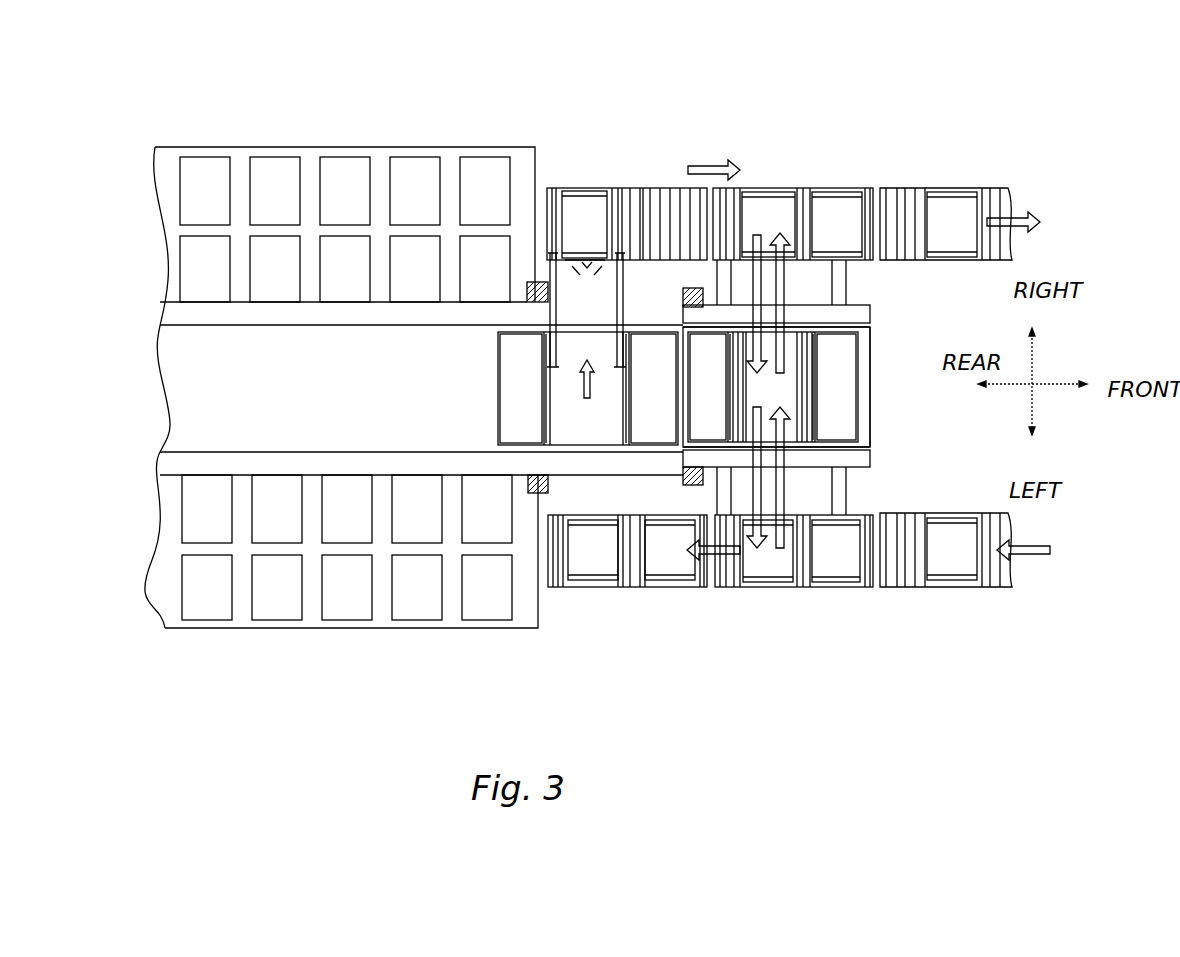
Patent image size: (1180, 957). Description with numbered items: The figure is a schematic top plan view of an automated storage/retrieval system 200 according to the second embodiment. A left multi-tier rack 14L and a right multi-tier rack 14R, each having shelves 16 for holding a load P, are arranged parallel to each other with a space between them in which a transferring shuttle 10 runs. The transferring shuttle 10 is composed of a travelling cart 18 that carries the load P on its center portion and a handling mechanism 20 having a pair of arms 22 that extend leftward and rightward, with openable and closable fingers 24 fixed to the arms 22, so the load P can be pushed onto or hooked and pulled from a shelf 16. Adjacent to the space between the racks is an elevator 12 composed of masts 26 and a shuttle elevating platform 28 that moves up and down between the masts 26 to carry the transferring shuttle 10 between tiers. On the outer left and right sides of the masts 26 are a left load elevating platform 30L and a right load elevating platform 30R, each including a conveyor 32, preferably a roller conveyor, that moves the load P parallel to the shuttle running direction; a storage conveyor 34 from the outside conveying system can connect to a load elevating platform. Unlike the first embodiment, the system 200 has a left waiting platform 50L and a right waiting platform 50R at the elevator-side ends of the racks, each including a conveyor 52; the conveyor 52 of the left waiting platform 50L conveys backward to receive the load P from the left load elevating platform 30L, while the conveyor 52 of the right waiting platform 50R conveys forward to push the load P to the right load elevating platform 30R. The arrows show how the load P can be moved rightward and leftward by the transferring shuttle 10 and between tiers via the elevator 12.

The automated storage/retrieval system 200 is at (998, 97).
The right multi-tier rack 14R is at (450, 147).
The left multi-tier rack 14L is at (493, 628).
The shelf 16 is at (313, 158).
The load P is at (202, 175).
The transferring shuttle 10 is at (497, 367).
The travelling cart 18 is at (533, 400).
The handling mechanism 20 is at (543, 412).
The arm 22 is at (556, 408).
The finger 24 is at (585, 281).
The mast 26 is at (685, 297).
The shuttle elevating platform 28 is at (873, 433).
The elevator 12 is at (880, 320).
The right waiting platform 50R is at (668, 188).
The left waiting platform 50L is at (672, 590).
The conveyor 52 is at (637, 188).
The right load elevating platform 30R is at (762, 188).
The left load elevating platform 30L is at (728, 590).
The conveyor 32 is at (806, 188).
The storage conveyor 34 is at (985, 578).